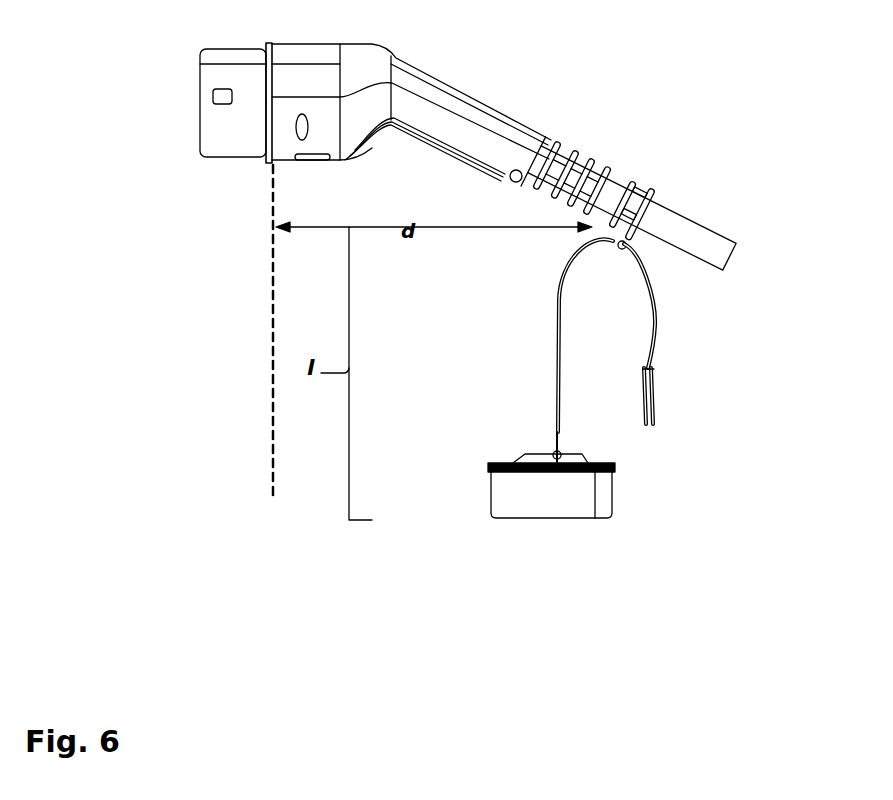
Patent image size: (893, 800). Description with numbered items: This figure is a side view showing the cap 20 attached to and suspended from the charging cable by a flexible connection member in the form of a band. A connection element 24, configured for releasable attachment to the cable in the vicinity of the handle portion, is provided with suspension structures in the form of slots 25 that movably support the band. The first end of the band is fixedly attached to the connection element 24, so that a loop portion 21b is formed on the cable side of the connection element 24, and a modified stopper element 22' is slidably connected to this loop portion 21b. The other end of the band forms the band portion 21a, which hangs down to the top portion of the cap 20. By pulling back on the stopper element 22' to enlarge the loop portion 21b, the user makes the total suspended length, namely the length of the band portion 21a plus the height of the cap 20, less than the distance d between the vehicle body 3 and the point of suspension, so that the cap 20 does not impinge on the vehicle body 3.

The vehicle body 3 is at (270, 304).
The cap 20 is at (480, 489).
The band portion 21a is at (560, 300).
The loop portion 21b is at (662, 317).
The modified stopper element 22' is at (708, 410).
The connection element 24 is at (652, 186).
The slots 25 is at (612, 225).